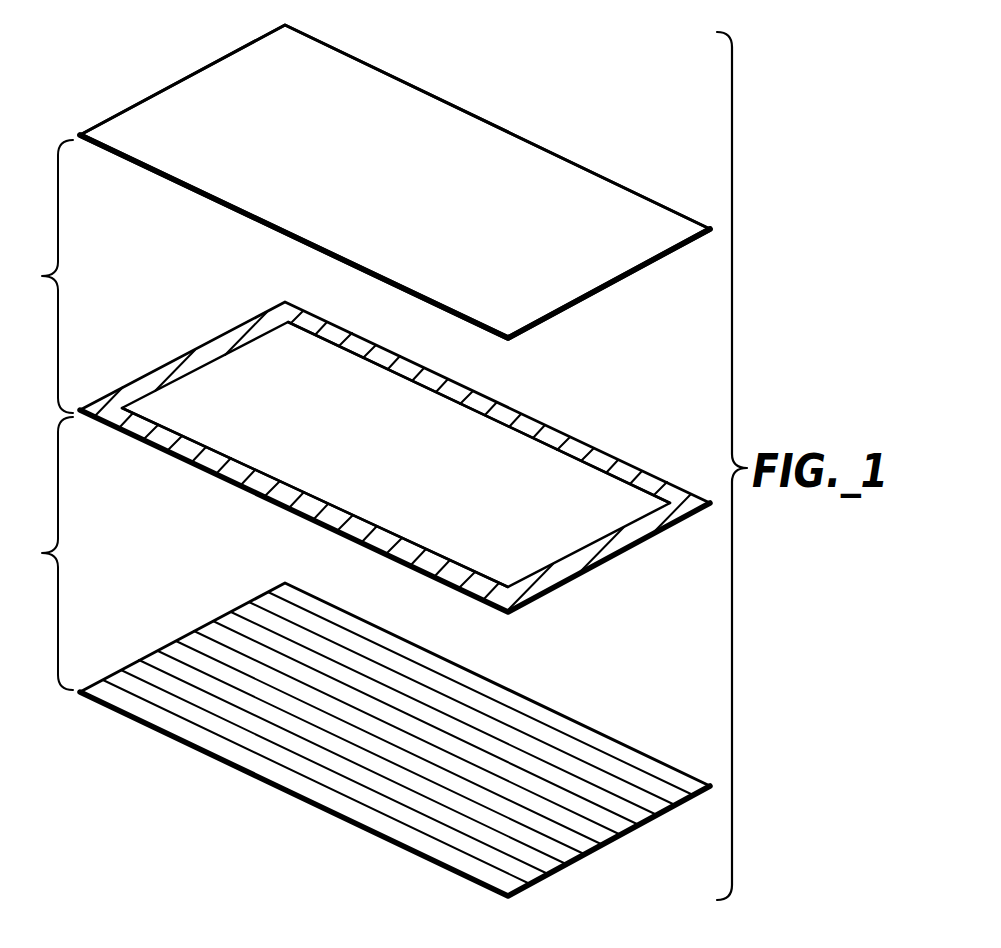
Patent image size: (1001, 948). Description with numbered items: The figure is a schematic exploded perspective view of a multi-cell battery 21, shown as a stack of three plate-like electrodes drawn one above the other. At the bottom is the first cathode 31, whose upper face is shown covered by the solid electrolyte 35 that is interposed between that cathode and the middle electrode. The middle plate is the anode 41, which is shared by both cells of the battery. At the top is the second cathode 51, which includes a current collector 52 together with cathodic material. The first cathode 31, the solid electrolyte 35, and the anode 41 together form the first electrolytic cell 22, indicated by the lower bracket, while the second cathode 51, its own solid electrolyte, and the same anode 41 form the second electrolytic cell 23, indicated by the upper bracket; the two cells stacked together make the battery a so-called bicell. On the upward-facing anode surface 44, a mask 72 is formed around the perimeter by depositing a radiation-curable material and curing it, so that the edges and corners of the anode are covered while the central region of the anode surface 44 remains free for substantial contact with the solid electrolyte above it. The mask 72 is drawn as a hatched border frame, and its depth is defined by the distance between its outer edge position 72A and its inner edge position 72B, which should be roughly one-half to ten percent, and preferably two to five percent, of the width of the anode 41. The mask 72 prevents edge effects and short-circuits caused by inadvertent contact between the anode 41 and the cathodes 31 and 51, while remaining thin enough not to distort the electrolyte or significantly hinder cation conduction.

The multi-cell battery 21 is at (172, 57).
The first electrolytic cell 22 is at (39, 553).
The second electrolytic cell 23 is at (39, 276).
The first cathode 31 is at (615, 845).
The solid electrolyte 35 is at (287, 758).
The anode 41 is at (615, 560).
The anode surface 44 is at (396, 454).
The second cathode 51 is at (615, 287).
The current collector 52 is at (395, 181).
The mask 72 is at (474, 401).
The outer edge of mask 72A is at (360, 545).
The inner edge of mask 72B is at (407, 542).